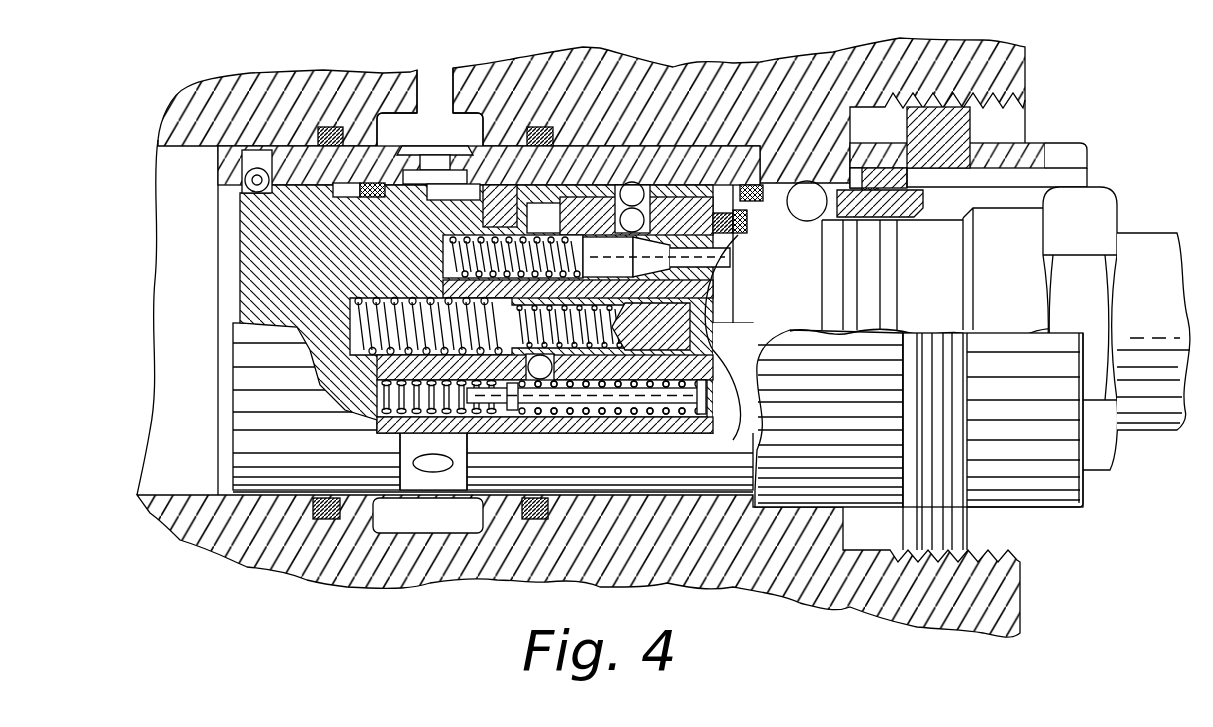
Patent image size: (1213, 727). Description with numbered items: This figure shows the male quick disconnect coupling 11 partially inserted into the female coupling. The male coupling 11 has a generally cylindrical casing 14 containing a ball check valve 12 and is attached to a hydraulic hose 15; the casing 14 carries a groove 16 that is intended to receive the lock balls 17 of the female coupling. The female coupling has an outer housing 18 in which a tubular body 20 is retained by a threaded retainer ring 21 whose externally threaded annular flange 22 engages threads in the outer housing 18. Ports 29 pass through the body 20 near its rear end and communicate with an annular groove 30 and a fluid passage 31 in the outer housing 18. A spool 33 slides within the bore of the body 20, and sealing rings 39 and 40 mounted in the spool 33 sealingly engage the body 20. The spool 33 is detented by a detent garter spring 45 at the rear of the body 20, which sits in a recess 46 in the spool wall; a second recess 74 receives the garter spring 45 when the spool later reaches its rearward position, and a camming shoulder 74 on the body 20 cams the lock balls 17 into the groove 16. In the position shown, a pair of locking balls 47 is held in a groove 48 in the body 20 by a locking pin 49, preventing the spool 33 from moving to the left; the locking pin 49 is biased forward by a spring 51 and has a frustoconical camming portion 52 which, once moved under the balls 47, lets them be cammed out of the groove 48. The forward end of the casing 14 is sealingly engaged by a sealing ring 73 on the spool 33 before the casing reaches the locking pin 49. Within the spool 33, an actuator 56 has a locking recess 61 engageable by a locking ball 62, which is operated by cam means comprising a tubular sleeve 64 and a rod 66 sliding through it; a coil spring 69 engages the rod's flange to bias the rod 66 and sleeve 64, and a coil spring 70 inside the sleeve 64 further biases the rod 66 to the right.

The male quick disconnect coupling 11 is at (1114, 196).
The ball check valve 12 is at (718, 322).
The casing 14 is at (760, 347).
The hydraulic hose 15 is at (1143, 233).
The groove 16 is at (872, 302).
The lock balls 17 is at (812, 225).
The outer housing 18 is at (758, 570).
The tubular body 20 is at (598, 158).
The retainer ring 21 is at (1035, 500).
The externally threaded annular flange 22 is at (945, 130).
The ports 29 is at (437, 165).
The annular groove 30 is at (418, 139).
The fluid passage 31 is at (430, 72).
The spool 33 is at (268, 245).
The sealing ring 39 is at (478, 205).
The sealing ring 40 is at (748, 186).
The detent garter spring 45 is at (258, 165).
The recess 46 is at (262, 195).
The locking balls 47 is at (617, 205).
The groove 48 is at (657, 185).
The locking pin 49 is at (745, 265).
The spring 51 is at (448, 258).
The frustoconical camming portion 52 is at (652, 268).
The actuator 56 is at (665, 338).
The locking recess 61 is at (540, 348).
The locking ball 62 is at (528, 368).
The tubular sleeve 64 is at (570, 405).
The locking pin 66 is at (660, 413).
The coil spring 69 is at (385, 398).
The coil spring 70 is at (688, 425).
The sealing ring 73 is at (738, 233).
The recess / camming shoulder 74 is at (340, 200).